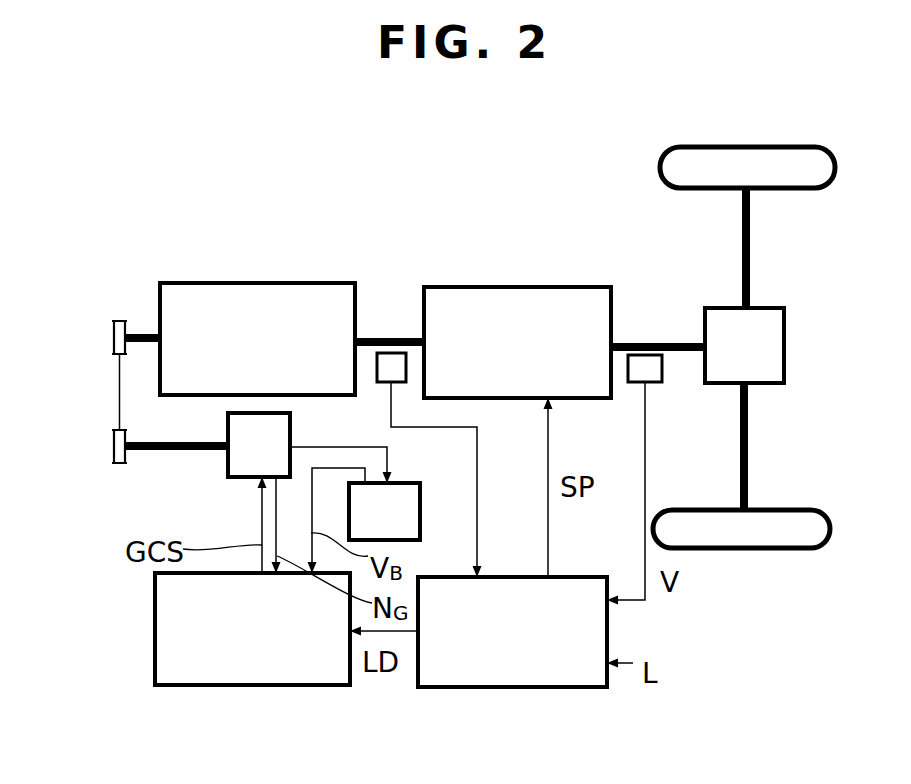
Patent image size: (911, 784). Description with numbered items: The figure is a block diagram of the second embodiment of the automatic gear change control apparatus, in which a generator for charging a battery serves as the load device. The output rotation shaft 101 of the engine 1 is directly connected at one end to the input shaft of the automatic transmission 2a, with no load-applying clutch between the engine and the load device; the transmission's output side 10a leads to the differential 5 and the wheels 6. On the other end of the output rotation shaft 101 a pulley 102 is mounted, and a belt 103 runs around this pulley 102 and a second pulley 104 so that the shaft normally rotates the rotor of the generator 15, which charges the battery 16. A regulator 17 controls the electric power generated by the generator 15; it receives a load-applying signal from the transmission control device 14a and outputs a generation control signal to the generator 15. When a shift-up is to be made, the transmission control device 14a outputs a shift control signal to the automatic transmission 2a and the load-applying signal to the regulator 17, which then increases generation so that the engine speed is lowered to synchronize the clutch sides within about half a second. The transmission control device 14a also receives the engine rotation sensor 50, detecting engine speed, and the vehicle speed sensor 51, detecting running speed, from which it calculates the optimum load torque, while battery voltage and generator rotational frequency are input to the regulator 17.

The engine 1 is at (293, 283).
The output rotation shaft 101 is at (373, 337).
The automatic transmission 2a is at (546, 287).
The transmission output shaft 10a is at (657, 345).
The differential gear 5 is at (785, 346).
The drive wheels 6 is at (793, 147).
The pulley 102 is at (113, 338).
The belt 103 is at (118, 393).
The pulley 104 is at (110, 448).
The generator 15 is at (237, 480).
The battery 16 is at (420, 512).
The regulator 17 is at (293, 688).
The transmission control device 14a is at (546, 690).
The engine rotation sensor 50 is at (370, 380).
The vehicle speed sensor 51 is at (662, 370).